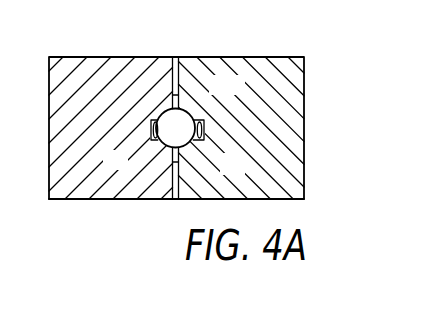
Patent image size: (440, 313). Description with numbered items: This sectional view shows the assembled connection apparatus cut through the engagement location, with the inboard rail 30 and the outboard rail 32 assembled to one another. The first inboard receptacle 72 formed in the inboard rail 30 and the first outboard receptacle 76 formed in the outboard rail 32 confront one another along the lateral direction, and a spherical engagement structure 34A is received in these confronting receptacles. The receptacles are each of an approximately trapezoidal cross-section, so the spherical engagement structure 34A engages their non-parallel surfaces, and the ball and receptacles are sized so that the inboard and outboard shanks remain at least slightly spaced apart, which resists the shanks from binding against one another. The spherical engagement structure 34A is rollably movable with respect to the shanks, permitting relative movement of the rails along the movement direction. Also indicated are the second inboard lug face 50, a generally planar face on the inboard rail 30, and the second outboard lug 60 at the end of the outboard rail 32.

The inboard rail 30 is at (318, 87).
The outboard rail 32 is at (80, 214).
The spherical engagement structure 34A is at (182, 117).
The second inboard lug face 50 is at (176, 62).
The second outboard lug 60 is at (176, 200).
The first inboard receptacle 72 is at (194, 143).
The first outboard receptacle 76 is at (153, 143).